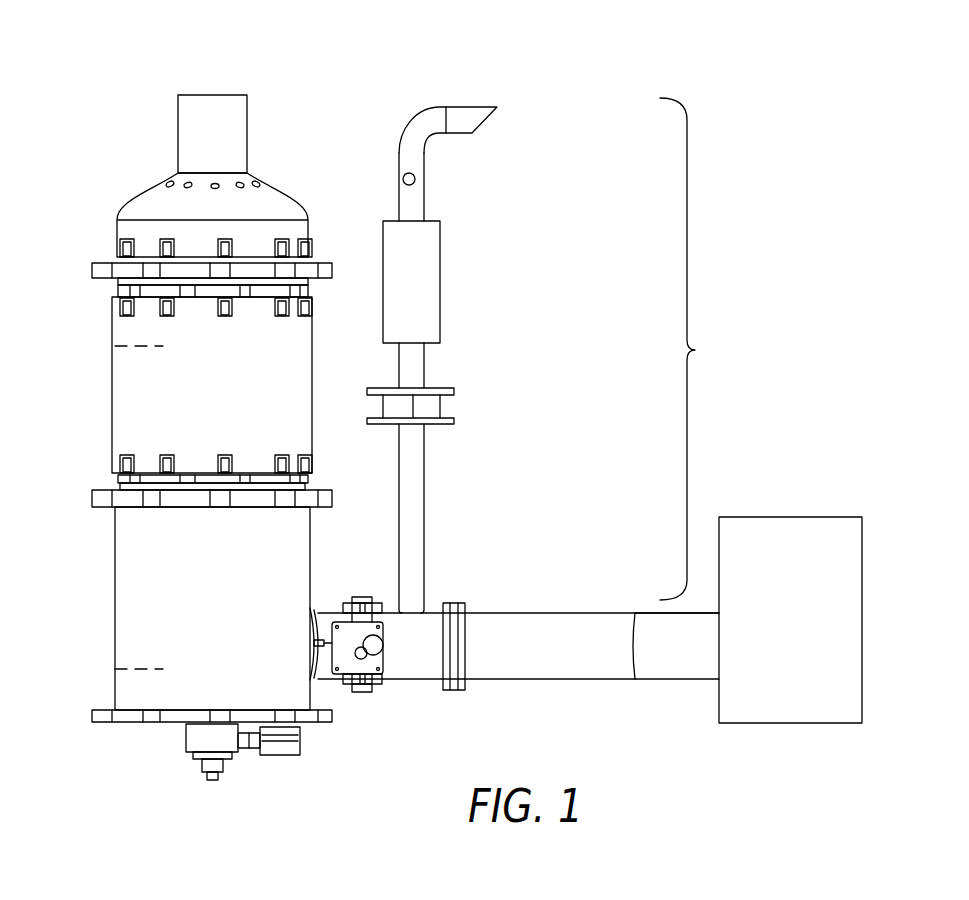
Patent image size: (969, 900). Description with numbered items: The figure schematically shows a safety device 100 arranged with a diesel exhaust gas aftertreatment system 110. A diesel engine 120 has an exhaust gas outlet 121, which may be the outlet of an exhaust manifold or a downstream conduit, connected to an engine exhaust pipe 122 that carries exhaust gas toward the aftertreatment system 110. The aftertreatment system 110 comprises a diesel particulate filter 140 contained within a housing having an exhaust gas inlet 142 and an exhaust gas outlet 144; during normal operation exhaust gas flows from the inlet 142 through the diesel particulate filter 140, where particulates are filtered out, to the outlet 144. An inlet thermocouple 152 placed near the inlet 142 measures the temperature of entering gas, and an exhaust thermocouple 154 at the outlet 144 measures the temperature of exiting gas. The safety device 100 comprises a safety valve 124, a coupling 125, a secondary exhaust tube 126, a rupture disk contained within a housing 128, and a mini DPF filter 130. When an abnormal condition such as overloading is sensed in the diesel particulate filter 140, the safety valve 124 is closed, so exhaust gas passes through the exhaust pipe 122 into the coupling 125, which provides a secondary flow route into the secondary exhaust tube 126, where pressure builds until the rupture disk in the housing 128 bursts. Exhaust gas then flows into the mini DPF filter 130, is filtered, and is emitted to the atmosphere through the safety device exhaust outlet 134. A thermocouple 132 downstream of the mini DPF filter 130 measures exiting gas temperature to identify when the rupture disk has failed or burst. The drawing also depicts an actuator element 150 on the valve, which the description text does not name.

The safety device 100 is at (705, 349).
The diesel exhaust gas aftertreatment system 110 is at (122, 122).
The diesel engine 120 is at (758, 530).
The exhaust gas outlet 121 is at (719, 668).
The engine exhaust pipe 122 is at (587, 625).
The safety valve 124 is at (363, 600).
The coupling 125 is at (433, 620).
The secondary exhaust tube 126 is at (424, 503).
The rupture disk housing 128 is at (430, 406).
The mini DPF filter 130 is at (432, 303).
The thermocouple 132 is at (416, 178).
The safety device exhaust outlet 134 is at (475, 119).
The diesel particulate filter 140 is at (112, 393).
The exhaust gas inlet 142 is at (312, 682).
The exhaust gas outlet 144 is at (210, 107).
The valve actuator 150 is at (362, 658).
The inlet thermocouple 152 is at (142, 671).
The exhaust thermocouple 154 is at (130, 345).